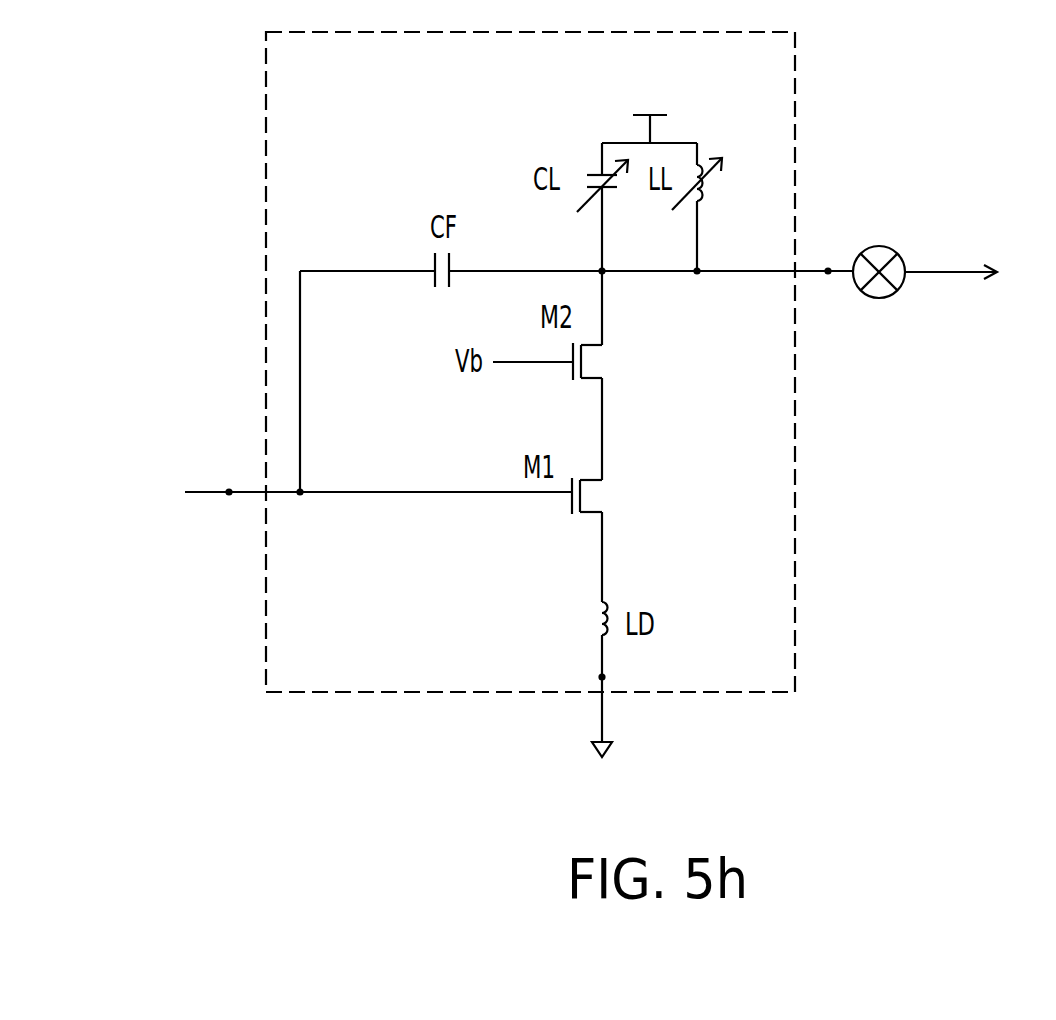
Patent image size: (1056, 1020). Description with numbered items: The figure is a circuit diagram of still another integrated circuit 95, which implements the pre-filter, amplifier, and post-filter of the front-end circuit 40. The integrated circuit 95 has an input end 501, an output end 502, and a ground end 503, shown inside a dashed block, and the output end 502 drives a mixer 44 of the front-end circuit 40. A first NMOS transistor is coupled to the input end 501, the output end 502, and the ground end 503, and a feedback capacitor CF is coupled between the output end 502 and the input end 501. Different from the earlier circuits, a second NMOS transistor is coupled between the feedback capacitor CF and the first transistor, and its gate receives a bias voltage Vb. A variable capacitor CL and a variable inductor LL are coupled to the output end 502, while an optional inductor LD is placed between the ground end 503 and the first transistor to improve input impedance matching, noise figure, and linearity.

The input end 501 is at (242, 526).
The output end 502 is at (830, 302).
The ground end 503 is at (576, 696).
The mixer 44 is at (878, 298).
The integrated circuit 95 is at (795, 500).
The front-end circuit 40 is at (1040, 789).